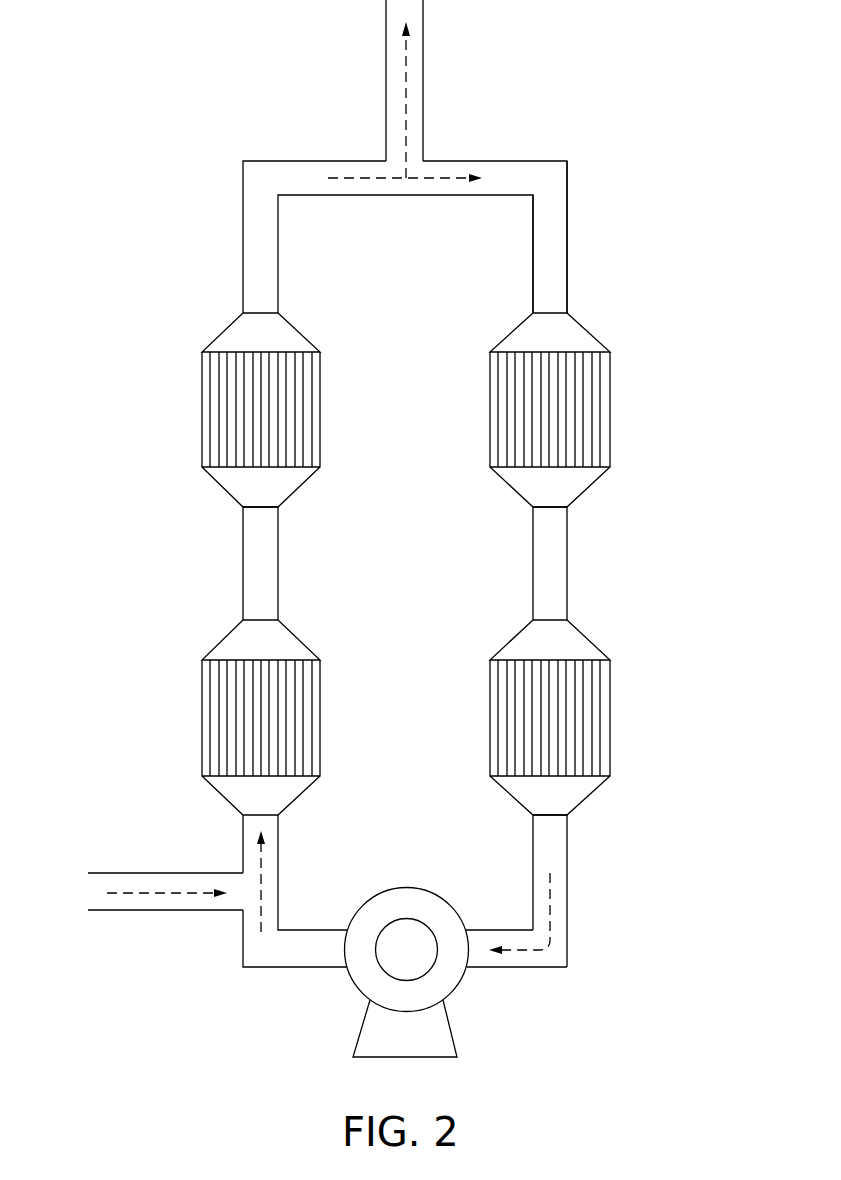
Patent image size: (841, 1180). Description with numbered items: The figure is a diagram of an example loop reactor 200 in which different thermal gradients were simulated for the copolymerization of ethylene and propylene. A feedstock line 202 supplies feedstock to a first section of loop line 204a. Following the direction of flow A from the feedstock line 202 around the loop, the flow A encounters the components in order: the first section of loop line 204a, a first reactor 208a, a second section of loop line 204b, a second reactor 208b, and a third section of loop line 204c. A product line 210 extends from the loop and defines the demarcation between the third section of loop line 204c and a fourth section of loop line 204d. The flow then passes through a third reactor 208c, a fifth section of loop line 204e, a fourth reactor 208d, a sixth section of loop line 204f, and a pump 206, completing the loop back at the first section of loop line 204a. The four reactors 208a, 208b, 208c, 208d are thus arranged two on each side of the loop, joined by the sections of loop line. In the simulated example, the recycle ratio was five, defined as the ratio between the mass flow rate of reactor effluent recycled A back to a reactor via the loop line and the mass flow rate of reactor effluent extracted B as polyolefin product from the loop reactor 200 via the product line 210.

The loop reactor 200 is at (145, 50).
The feedstock line 202 is at (133, 909).
The first section of loop line 204a is at (265, 969).
The second section of loop line 204b is at (243, 563).
The third section of loop line 204c is at (343, 196).
The fourth section of loop line 204d is at (568, 236).
The fifth section of loop line 204e is at (568, 563).
The sixth section of loop line 204f is at (568, 862).
The pump 206 is at (450, 1026).
The first reactor 208a is at (202, 717).
The second reactor 208b is at (202, 409).
The third reactor 208c is at (610, 408).
The fourth reactor 208d is at (610, 716).
The product line 210 is at (386, 62).
The direction of flow A is at (262, 879).
The reactor effluent extracted B is at (407, 100).